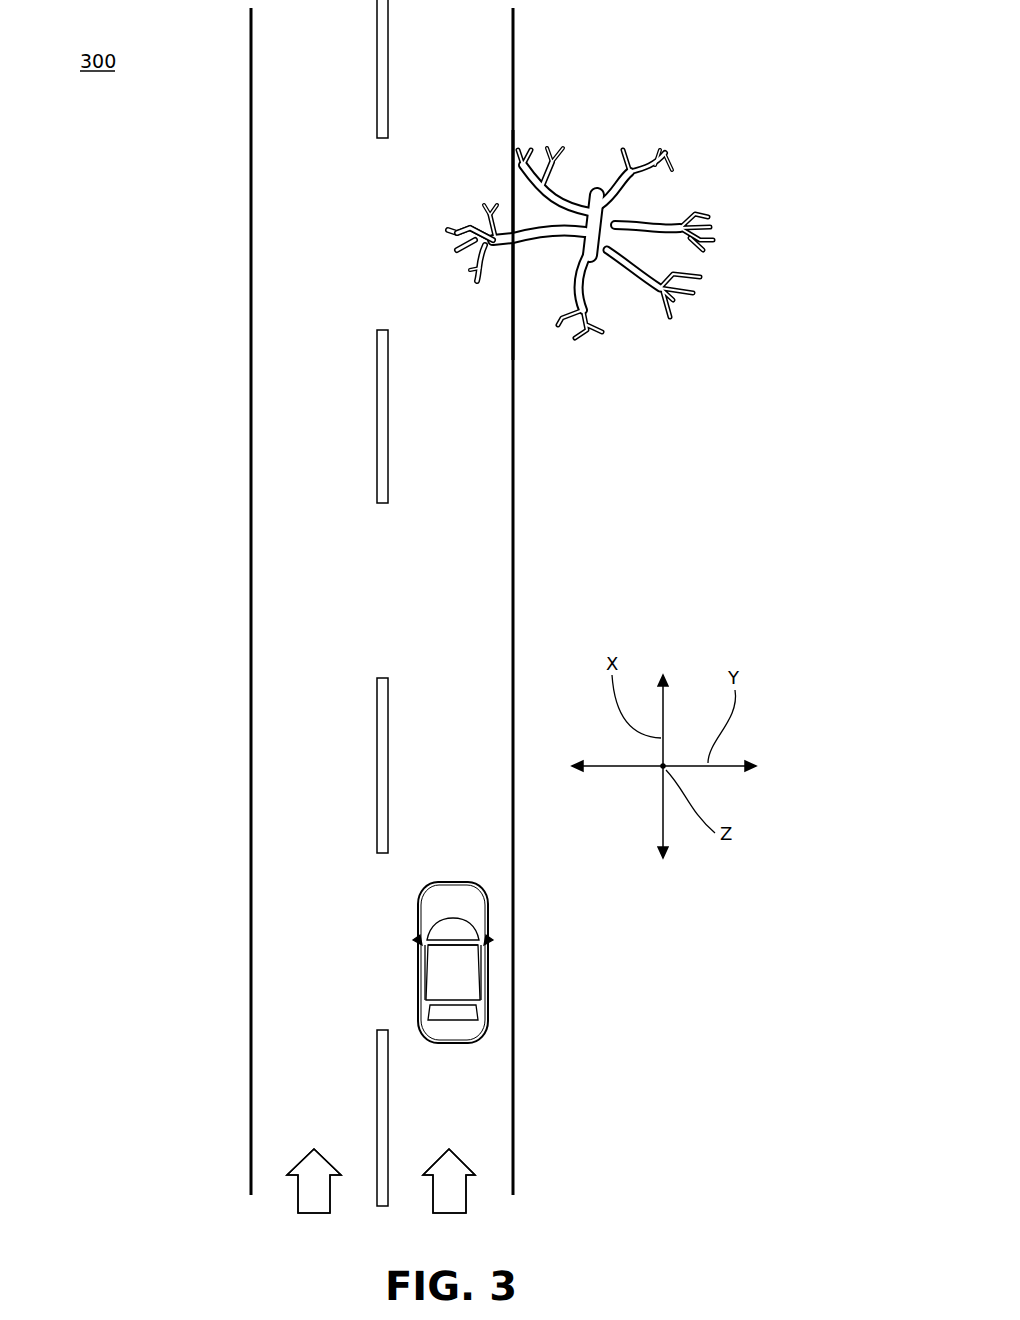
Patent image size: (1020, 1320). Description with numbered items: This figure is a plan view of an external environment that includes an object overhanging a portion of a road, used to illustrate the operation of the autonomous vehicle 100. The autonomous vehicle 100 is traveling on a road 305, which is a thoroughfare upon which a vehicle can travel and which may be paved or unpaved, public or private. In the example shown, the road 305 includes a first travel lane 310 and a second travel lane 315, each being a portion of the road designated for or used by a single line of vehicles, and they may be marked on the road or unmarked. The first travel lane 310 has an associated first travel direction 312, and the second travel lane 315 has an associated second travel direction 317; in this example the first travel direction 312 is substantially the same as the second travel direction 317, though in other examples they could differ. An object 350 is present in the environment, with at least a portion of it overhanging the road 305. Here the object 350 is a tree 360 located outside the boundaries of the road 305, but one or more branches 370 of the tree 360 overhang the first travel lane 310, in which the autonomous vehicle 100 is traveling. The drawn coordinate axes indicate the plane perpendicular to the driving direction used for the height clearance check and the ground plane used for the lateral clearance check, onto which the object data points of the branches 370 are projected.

The road 305 is at (249, 740).
The first travel lane 310 is at (462, 1094).
The second travel lane 315 is at (329, 1099).
The first travel direction 312 is at (466, 1197).
The second travel direction 317 is at (298, 1198).
The object 350 is at (655, 138).
The tree 360 is at (596, 207).
The branches 370 is at (487, 290).
The autonomous vehicle 100 is at (490, 957).